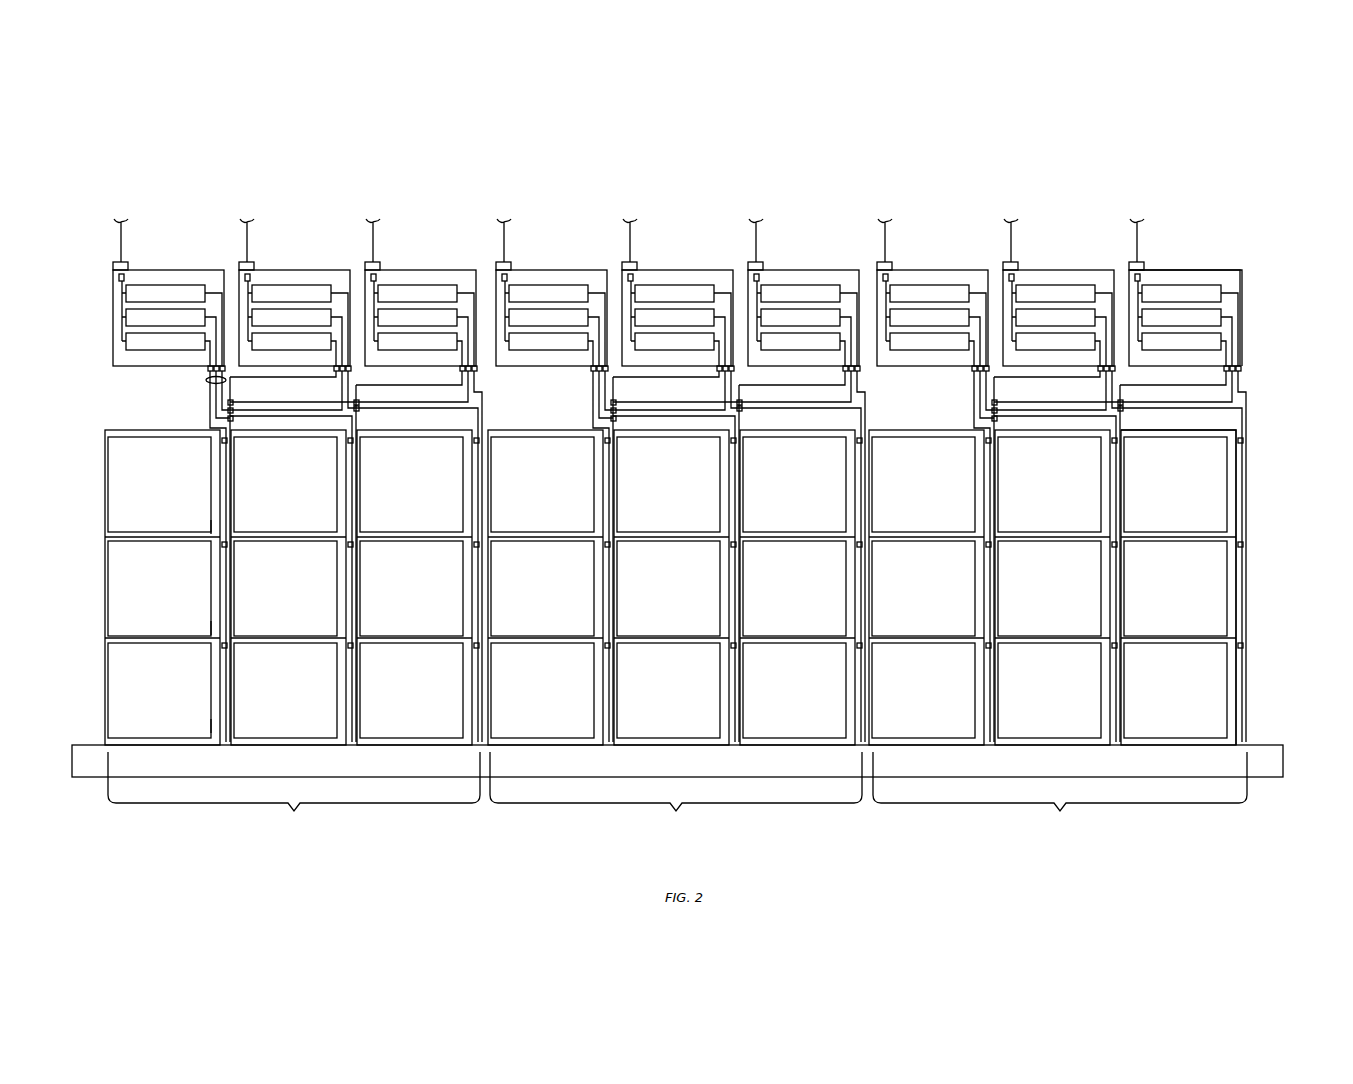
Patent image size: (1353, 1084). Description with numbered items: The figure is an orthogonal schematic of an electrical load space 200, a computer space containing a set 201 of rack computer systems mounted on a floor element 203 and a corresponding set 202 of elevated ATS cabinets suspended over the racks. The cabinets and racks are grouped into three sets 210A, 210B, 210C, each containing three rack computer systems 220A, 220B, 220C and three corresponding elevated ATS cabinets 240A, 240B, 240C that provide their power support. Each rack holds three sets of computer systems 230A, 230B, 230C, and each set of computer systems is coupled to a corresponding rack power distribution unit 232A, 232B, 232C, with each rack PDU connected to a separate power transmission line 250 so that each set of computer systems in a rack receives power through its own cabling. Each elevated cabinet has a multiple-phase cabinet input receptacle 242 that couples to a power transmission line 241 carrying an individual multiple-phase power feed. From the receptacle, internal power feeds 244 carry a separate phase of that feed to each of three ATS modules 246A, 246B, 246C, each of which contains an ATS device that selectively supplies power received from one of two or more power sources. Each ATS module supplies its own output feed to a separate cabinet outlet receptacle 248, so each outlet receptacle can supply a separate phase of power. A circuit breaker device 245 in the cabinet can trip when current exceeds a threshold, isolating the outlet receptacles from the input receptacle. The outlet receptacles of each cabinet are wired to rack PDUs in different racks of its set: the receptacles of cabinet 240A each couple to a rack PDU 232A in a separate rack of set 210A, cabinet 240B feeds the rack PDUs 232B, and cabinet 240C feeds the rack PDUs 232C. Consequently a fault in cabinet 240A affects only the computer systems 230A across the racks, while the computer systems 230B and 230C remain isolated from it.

The electrical load space 200 is at (1278, 157).
The set of rack computer systems 201 is at (1278, 562).
The set of elevated ATS cabinets 202 is at (1276, 320).
The floor element 203 is at (1278, 769).
The set 210A is at (294, 795).
The set 210B is at (676, 795).
The set 210C is at (1060, 795).
The rack computer system 220A is at (162, 614).
The rack computer system 220B is at (278, 764).
The rack computer system 220C is at (393, 764).
The computer systems 230A is at (182, 491).
The computer systems 230B is at (182, 596).
The computer systems 230C is at (175, 696).
The rack power distribution unit 232A is at (203, 527).
The rack power distribution unit 232B is at (203, 628).
The rack power distribution unit 232C is at (203, 726).
The elevated ATS cabinet 240A is at (153, 305).
The elevated ATS cabinet 240B is at (289, 272).
The elevated ATS cabinet 240C is at (412, 272).
The power transmission line 241 is at (123, 239).
The multiple-phase cabinet input receptacle 242 is at (128, 266).
The internal power feeds 244 is at (122, 321).
The circuit breaker device 245 is at (117, 278).
The ATS module 246A is at (176, 296).
The ATS module 246B is at (130, 321).
The ATS module 246C is at (140, 346).
The cabinet outlet receptacle 248 is at (197, 373).
The power transmission line 250 is at (206, 380).